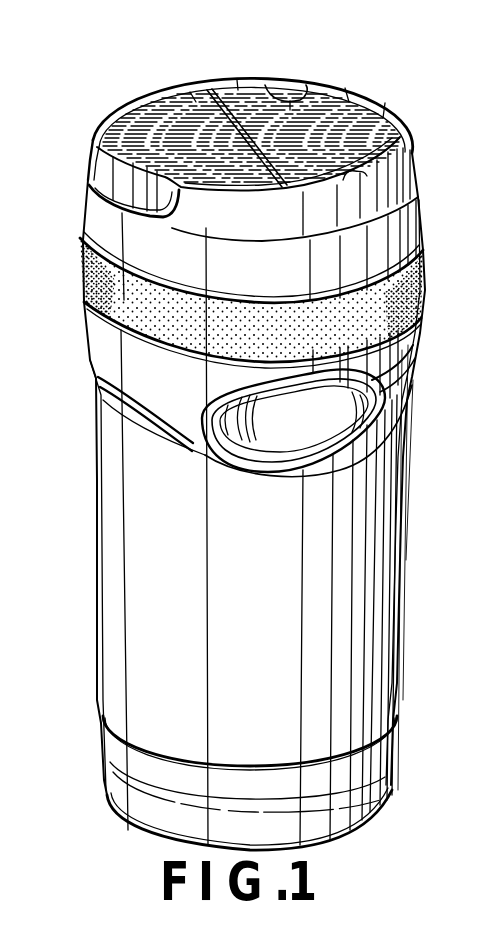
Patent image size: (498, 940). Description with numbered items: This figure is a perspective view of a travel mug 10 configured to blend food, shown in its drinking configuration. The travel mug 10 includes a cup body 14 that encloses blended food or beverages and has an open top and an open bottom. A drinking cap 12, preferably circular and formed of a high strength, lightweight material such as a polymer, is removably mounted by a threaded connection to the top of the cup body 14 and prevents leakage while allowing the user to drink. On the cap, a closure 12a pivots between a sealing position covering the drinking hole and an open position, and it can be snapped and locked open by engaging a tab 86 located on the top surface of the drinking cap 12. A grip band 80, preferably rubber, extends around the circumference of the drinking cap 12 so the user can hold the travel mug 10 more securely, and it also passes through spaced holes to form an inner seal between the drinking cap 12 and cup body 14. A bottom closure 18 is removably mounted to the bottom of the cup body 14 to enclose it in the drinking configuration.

The travel mug 10 is at (431, 212).
The drinking cap 12 is at (405, 236).
The closure 12a is at (150, 140).
The cup body 14 is at (383, 532).
The bottom closure 18 is at (360, 790).
The grip band 80 is at (165, 326).
The tab 86 is at (288, 82).